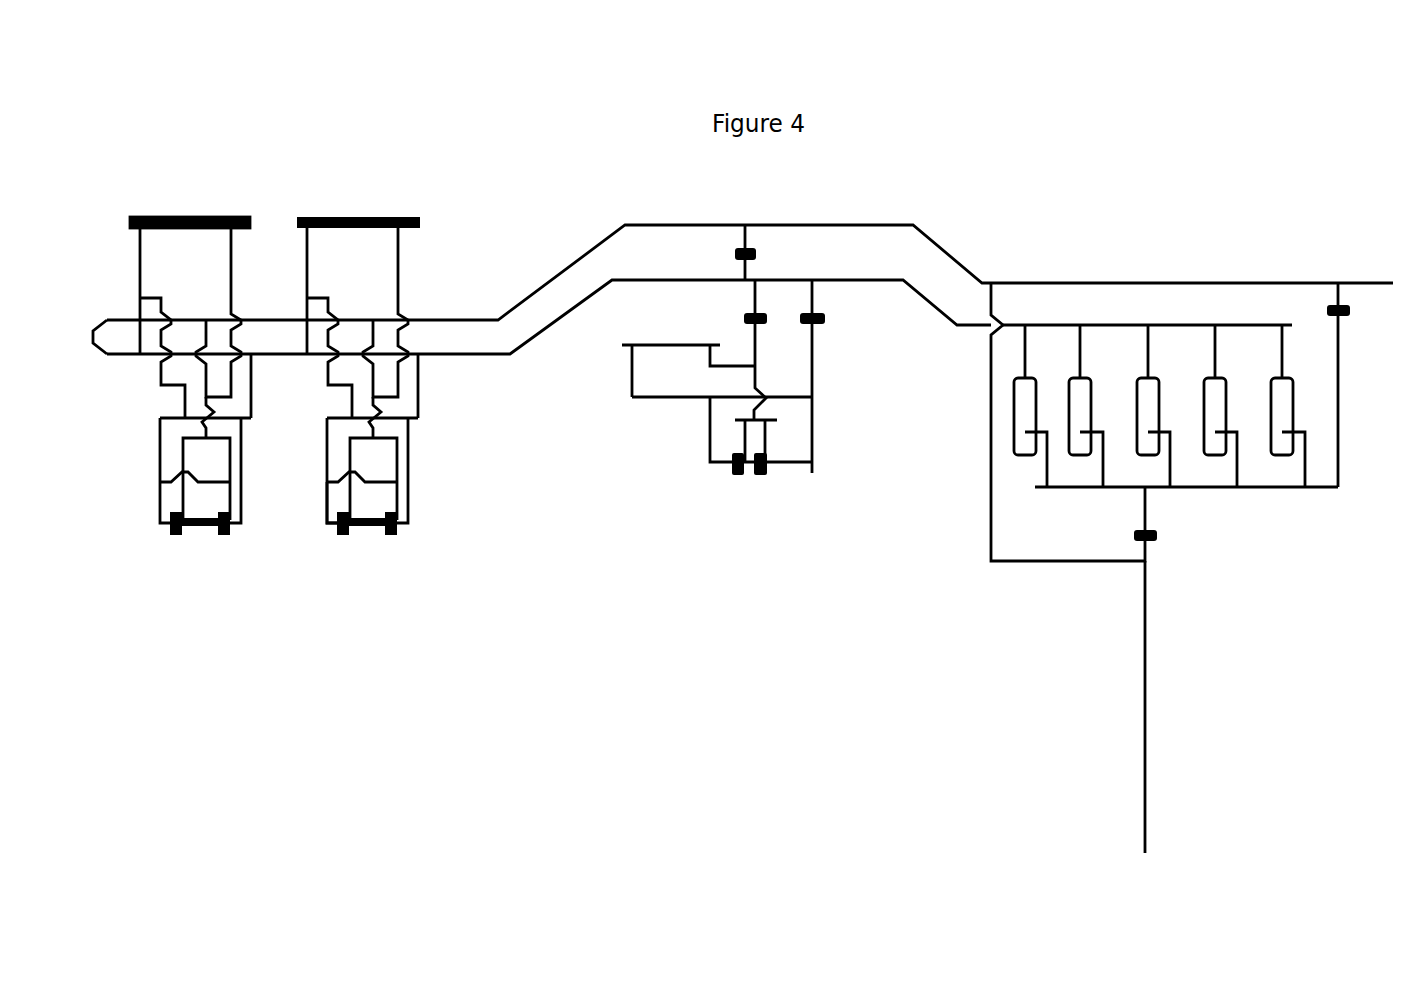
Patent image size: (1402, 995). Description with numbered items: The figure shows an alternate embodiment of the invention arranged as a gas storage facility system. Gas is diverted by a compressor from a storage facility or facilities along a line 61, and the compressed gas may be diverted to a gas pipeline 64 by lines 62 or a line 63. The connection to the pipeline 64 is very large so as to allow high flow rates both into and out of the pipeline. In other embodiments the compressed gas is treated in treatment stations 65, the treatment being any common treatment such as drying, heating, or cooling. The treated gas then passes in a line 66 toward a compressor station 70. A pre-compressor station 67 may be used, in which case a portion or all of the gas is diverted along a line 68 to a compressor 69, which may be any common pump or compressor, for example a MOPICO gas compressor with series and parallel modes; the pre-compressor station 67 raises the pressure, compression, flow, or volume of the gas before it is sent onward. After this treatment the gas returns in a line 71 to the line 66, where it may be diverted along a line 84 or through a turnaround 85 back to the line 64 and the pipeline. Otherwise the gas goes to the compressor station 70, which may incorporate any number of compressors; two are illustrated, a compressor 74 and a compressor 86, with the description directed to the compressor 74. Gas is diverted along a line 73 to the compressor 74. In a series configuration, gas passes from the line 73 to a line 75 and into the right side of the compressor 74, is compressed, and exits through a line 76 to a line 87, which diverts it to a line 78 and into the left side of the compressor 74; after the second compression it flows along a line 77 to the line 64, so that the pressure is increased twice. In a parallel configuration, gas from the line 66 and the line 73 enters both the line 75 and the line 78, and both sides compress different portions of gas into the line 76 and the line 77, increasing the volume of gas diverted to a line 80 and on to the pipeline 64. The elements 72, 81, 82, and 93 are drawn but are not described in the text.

The line 61 is at (1155, 668).
The lines 62 is at (1023, 572).
The line 63 is at (1339, 411).
The gas pipeline 64 is at (1238, 272).
The treatment stations 65 is at (1013, 450).
The line 66 is at (1013, 315).
The pre-compressor station 67 is at (720, 560).
The line 68 is at (815, 345).
The compressor 69 is at (767, 470).
The compressor station 70 is at (295, 148).
The line 71 is at (771, 328).
The fuel filter 72 is at (668, 345).
The line 73 is at (420, 387).
The compressor 74 is at (405, 525).
The line 75 is at (410, 440).
The line 76 is at (398, 462).
The line 77 is at (348, 461).
The line 78 is at (327, 535).
The line 80 is at (362, 398).
The vent pipe 81 is at (407, 278).
The filler pipe 82 is at (296, 277).
The line 84 is at (737, 248).
The turnaround 85 is at (105, 318).
The compressor 86 is at (203, 535).
The line 87 is at (372, 484).
The filler cap 93 is at (375, 213).